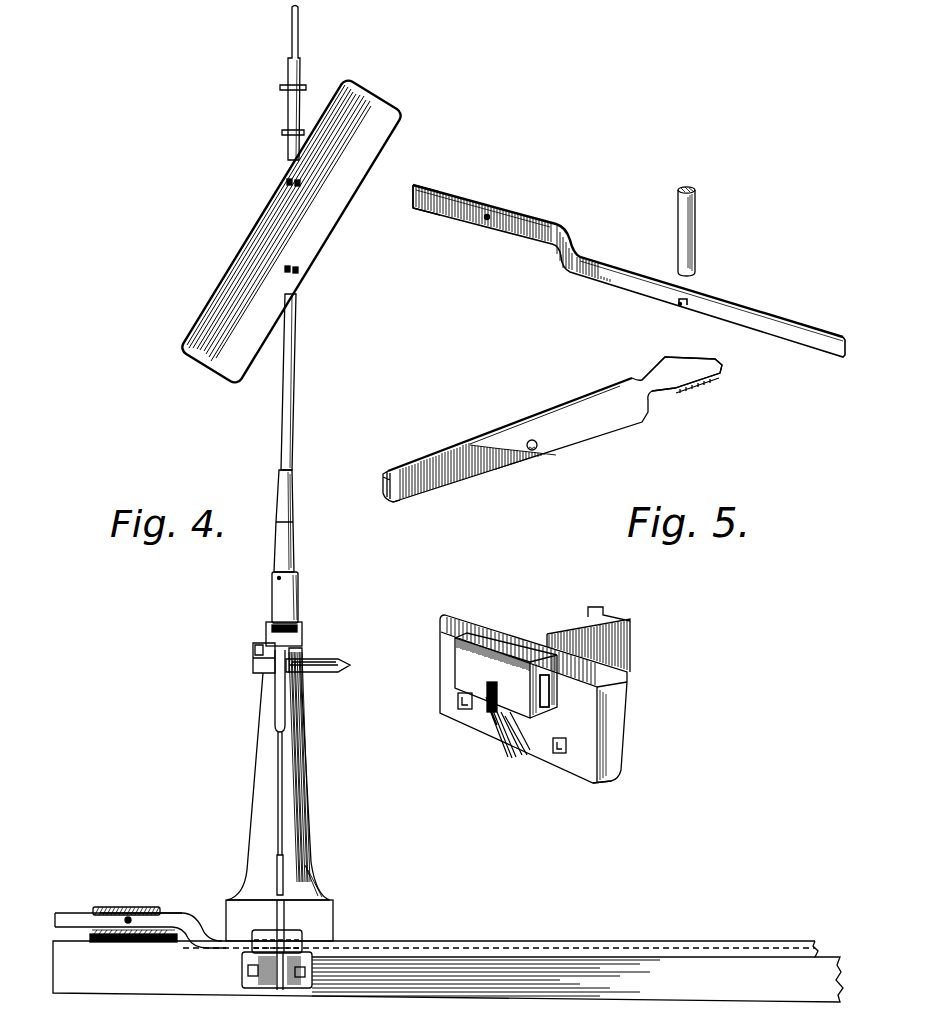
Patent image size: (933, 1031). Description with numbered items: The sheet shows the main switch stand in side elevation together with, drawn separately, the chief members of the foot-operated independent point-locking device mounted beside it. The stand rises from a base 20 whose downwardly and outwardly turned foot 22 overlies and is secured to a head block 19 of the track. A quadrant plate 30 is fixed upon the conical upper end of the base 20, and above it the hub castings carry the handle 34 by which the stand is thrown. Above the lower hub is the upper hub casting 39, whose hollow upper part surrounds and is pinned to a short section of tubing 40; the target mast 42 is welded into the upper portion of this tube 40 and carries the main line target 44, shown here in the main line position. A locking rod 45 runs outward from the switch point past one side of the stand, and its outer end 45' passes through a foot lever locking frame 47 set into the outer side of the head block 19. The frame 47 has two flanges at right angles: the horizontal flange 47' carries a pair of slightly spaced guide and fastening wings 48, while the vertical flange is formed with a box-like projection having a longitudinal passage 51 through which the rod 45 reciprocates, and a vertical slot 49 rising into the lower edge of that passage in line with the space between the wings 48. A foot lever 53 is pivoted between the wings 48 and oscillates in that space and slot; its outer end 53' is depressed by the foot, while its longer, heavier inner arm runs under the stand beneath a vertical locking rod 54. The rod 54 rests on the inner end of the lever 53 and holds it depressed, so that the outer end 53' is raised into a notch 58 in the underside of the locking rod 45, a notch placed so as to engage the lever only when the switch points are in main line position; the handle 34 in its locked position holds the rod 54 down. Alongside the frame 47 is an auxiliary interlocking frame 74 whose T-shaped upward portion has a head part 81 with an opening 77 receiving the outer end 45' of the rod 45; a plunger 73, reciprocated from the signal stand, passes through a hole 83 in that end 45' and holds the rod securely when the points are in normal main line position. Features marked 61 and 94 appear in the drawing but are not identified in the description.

In FIG. 4, the head block 19 is at (448, 971).
In FIG. 4, the base 20 is at (262, 798).
In FIG. 4, the foot 22 is at (279, 926).
In FIG. 4, the quadrant plate 30 is at (350, 667).
In FIG. 4, the handle 34 is at (280, 682).
In FIG. 4, the upper hub casting 39 is at (268, 628).
In FIG. 4, the tube 40 is at (295, 537).
In FIG. 4, the target mast 42 is at (295, 421).
In FIG. 4, the main line target 44 is at (291, 232).
In FIG. 4, the locking rod 45 is at (499, 933).
In FIG. 5, the locking rod 45 is at (629, 271).
In FIG. 4, the outer end of locking rod 45' is at (140, 915).
In FIG. 5, the outer end of locking rod 45' is at (436, 184).
In FIG. 4, the foot lever locking frame 47 is at (253, 972).
In FIG. 5, the foot lever locking frame 47 is at (533, 680).
In FIG. 5, the horizontal flange 47' is at (634, 695).
In FIG. 5, the guide and fastening wings 48 is at (624, 622).
In FIG. 5, the vertical slot 49 is at (497, 708).
In FIG. 5, the box-like projection with longitudinal passage 51 is at (548, 706).
In FIG. 4, the foot lever 53 is at (290, 987).
In FIG. 5, the foot lever 53 is at (555, 429).
In FIG. 5, the outer end of foot lever 53' is at (402, 503).
In FIG. 4, the vertical locking rod 54 is at (282, 917).
In FIG. 5, the vertical locking rod 54 is at (697, 238).
In FIG. 5, the notch 58 is at (679, 304).
In FIG. 5, the block 61 is at (506, 675).
In FIG. 4, the plunger 73 is at (125, 906).
In FIG. 4, the auxiliary interlocking frame 74 is at (120, 943).
In FIG. 4, the opening 77 is at (165, 914).
In FIG. 4, the head part of T element 81 is at (150, 907).
In FIG. 5, the hole 83 is at (486, 221).
In FIG. 5, the hole 94 is at (528, 441).